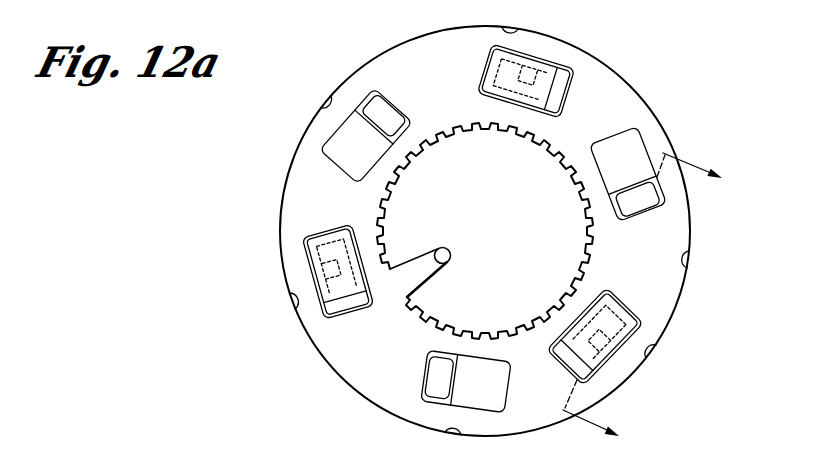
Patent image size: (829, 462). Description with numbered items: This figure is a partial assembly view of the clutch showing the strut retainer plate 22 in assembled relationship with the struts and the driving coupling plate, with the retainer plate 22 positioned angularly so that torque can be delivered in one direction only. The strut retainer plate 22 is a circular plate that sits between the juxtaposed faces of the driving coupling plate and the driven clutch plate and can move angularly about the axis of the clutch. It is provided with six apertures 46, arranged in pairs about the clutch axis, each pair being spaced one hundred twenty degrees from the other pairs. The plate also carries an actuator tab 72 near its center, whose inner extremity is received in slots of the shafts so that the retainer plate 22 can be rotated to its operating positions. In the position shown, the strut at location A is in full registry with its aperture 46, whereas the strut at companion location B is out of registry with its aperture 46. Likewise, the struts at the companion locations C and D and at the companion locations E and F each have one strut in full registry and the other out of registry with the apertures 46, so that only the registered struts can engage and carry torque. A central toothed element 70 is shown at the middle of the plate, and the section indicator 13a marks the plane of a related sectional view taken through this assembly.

The strut retainer plate 22 is at (687, 263).
The apertures 46 is at (313, 168).
The central toothed gear 70 is at (587, 249).
The actuator tab 72 is at (427, 266).
The strut location A is at (324, 261).
The strut location B is at (394, 104).
The strut location C is at (592, 359).
The strut location D is at (412, 395).
The strut location E is at (548, 70).
The strut location F is at (643, 210).
The section line 13a- 13a is at (669, 305).